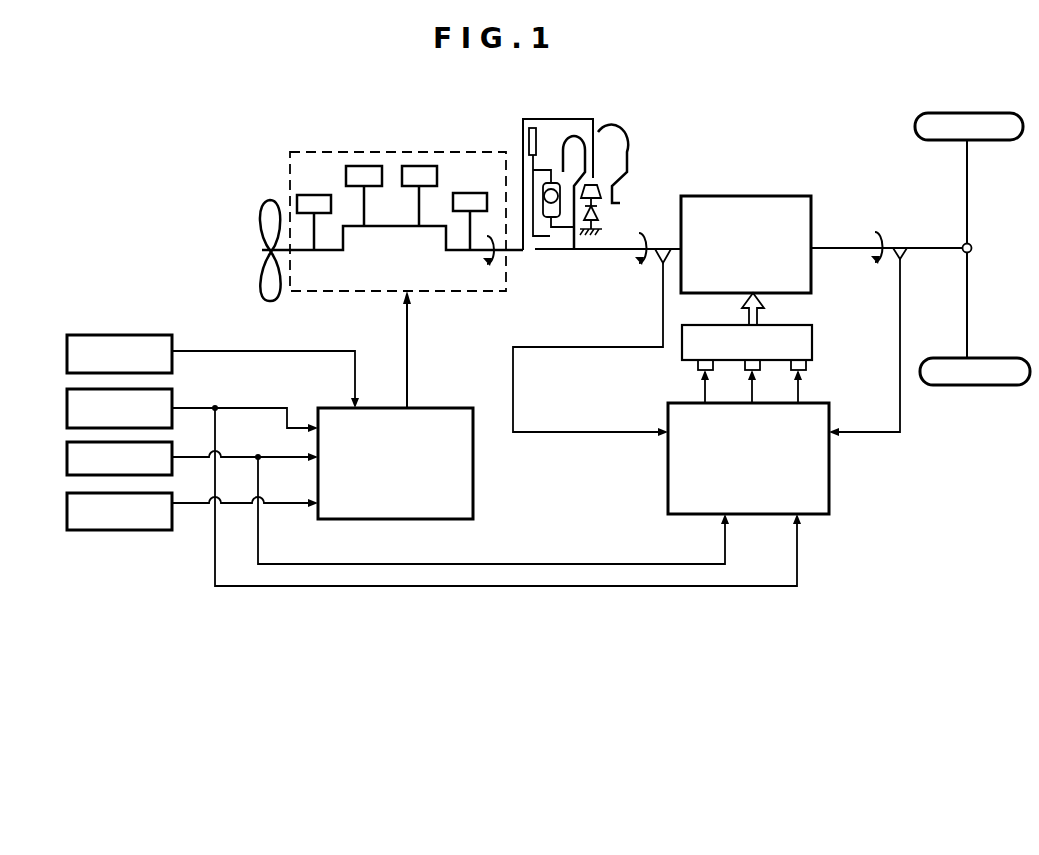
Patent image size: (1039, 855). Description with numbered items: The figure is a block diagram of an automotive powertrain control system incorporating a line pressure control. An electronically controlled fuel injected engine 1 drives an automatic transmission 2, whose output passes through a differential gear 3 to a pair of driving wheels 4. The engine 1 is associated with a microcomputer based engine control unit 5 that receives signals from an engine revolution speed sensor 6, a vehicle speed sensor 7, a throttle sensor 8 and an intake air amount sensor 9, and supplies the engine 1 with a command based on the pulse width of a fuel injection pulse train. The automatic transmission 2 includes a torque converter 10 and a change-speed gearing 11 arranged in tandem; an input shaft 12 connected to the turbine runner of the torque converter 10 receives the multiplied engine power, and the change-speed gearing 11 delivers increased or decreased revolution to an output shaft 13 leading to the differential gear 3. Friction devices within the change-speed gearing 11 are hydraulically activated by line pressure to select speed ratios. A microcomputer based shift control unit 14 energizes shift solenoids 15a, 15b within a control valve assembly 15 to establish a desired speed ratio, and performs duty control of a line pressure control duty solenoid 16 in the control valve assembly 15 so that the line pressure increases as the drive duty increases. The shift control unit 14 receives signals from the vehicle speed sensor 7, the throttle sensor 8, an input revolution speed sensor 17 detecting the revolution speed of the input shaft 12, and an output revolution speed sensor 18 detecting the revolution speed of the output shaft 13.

The engine 1 is at (363, 152).
The automatic transmission 2 is at (720, 170).
The differential gear 3 is at (972, 246).
The pair of driving wheels 4 is at (976, 113).
The engine control unit 5 is at (380, 408).
The engine revolution speed sensor 6 is at (67, 509).
The vehicle speed sensor 7 is at (67, 457).
The throttle sensor 8 is at (67, 409).
The intake air amount sensor 9 is at (67, 355).
The torque converter 10 is at (614, 133).
The change-speed gearing 11 is at (790, 196).
The input shaft 12 is at (591, 252).
The output shaft 13 is at (831, 248).
The shift control unit 14 is at (829, 478).
The control valve assembly 15 is at (812, 340).
The shift solenoid 15a is at (807, 364).
The shift solenoid 15b is at (761, 367).
The line pressure control duty solenoid 16 is at (697, 367).
The input revolution speed sensor 17 is at (656, 263).
The output revolution speed sensor 18 is at (908, 254).